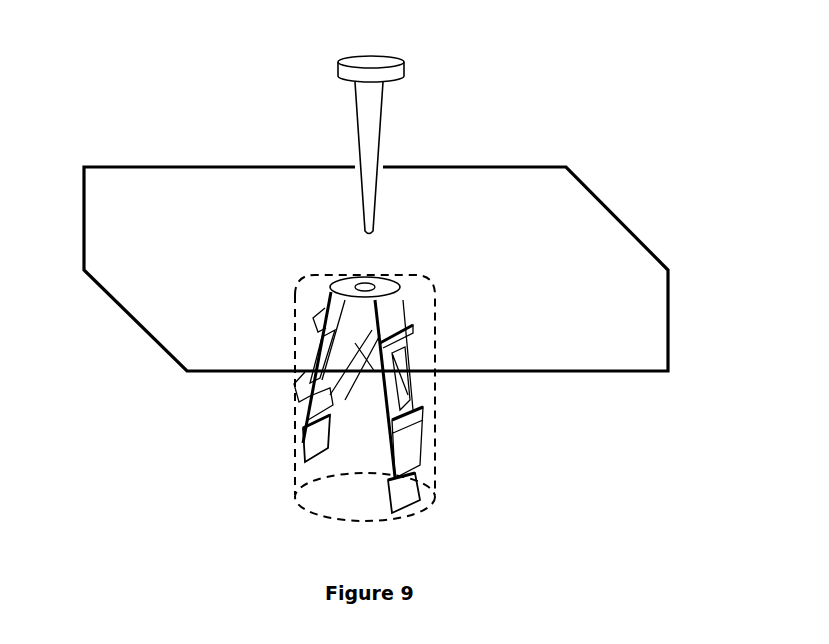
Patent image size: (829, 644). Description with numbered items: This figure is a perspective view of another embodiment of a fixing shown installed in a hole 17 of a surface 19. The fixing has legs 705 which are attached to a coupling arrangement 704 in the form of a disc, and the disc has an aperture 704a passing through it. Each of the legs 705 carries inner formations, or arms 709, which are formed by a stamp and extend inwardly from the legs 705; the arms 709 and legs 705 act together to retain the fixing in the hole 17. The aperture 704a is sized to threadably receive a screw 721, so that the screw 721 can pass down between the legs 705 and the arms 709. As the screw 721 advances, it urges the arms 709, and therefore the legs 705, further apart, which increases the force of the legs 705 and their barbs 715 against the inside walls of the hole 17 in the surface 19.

The surface 19 is at (155, 197).
The screw 721 is at (340, 76).
The hole 17 is at (360, 507).
The coupling arrangement 704 is at (431, 262).
The aperture 704a is at (375, 285).
The inner formations (arms) 709 is at (308, 412).
The legs 705 is at (407, 440).
The barbs 715 is at (425, 424).